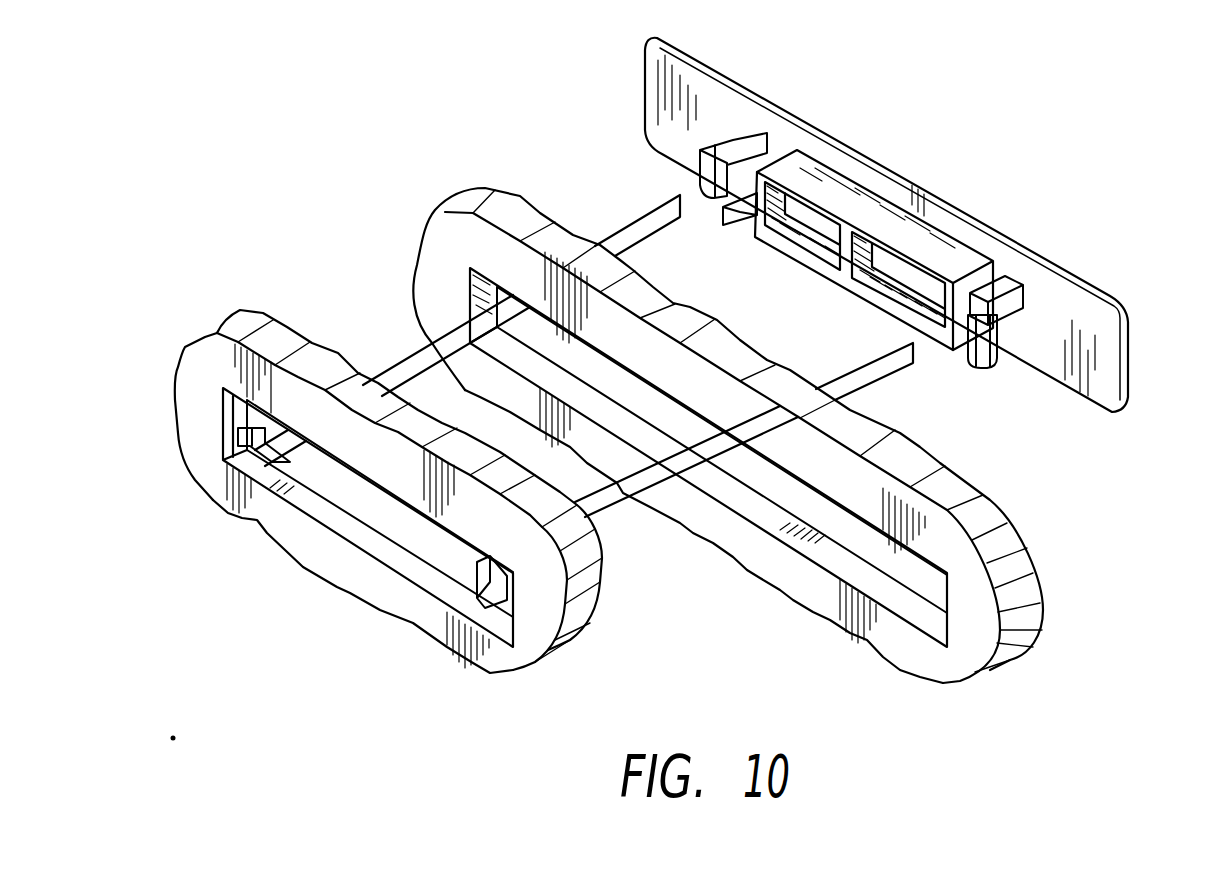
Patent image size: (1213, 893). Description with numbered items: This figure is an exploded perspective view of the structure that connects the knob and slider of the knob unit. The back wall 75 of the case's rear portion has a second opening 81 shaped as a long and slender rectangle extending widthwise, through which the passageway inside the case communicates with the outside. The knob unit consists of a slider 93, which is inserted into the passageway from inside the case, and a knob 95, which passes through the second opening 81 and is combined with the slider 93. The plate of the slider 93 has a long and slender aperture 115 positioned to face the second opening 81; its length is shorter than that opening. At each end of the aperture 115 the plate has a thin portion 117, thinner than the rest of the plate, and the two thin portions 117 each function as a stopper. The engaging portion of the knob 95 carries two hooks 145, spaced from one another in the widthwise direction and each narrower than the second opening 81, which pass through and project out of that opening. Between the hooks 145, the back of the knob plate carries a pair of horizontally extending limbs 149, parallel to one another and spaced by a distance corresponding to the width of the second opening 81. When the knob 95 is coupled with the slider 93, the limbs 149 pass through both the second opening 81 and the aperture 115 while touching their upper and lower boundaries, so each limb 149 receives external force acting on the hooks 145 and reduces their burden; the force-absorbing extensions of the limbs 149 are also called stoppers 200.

The back wall 75 is at (795, 590).
The second opening 81 is at (923, 582).
The slider 93 is at (350, 582).
The knob 95 is at (1107, 395).
The aperture 115 is at (312, 485).
The thin portion 117 is at (222, 456).
The hook 145 is at (744, 146).
The horizontally extending limb 149 is at (887, 212).
The stopper 200 is at (722, 220).